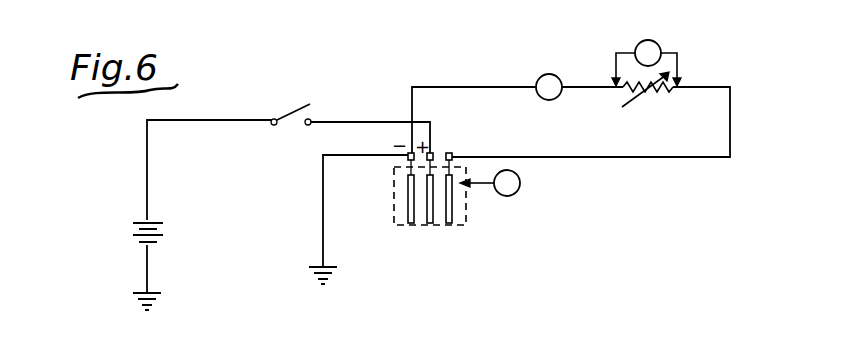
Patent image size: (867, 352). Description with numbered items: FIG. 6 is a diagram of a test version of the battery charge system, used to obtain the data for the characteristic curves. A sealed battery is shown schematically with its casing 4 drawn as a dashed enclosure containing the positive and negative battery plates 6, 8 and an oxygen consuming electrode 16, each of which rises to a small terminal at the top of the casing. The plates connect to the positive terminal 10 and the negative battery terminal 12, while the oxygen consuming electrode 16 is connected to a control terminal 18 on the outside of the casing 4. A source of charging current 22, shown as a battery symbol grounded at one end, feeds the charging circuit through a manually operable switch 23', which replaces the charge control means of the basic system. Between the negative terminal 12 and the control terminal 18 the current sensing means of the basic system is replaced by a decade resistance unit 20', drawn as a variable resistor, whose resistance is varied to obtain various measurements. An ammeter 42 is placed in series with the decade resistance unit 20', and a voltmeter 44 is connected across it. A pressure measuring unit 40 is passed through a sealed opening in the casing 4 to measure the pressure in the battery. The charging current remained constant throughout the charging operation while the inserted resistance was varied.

The casing 4 is at (466, 210).
The positive battery plates 6 is at (428, 224).
The negative battery plates 8 is at (410, 222).
The oxygen consuming electrodes 16 is at (448, 226).
The positive terminal 10 is at (434, 152).
The negative battery terminal 12 is at (407, 158).
The terminal 18 is at (452, 152).
The decade resistance unit 20' is at (647, 110).
The source of charging current 22 is at (131, 223).
The manually operable switch 23' is at (266, 103).
The pressure measuring unit 40 is at (517, 192).
The ammeter 42 is at (566, 50).
The voltmeter 44 is at (660, 44).